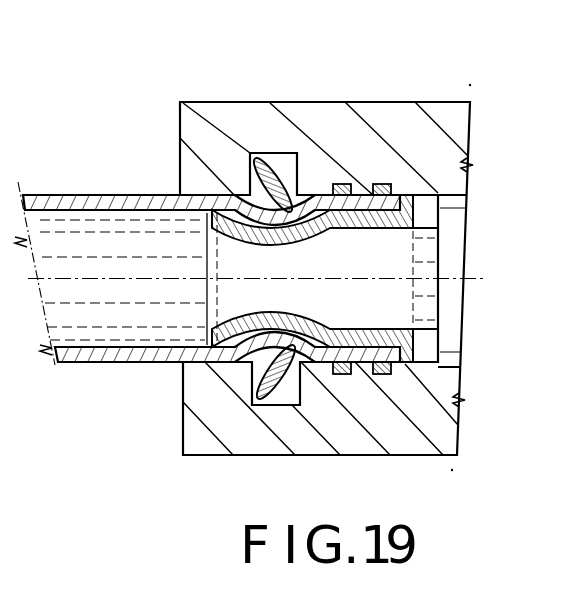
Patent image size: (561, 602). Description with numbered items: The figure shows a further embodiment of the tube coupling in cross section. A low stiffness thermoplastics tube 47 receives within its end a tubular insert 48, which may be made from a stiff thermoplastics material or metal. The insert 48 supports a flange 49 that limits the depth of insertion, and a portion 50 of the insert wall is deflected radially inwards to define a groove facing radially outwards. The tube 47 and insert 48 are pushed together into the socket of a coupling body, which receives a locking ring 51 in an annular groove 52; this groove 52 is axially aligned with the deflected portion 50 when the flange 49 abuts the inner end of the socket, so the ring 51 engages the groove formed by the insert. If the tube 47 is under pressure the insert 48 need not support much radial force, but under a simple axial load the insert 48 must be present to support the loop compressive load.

The low stiffness thermoplastics tube 47 is at (148, 196).
The tubular insert 48 is at (135, 363).
The flange 49 is at (404, 364).
The portion of the wall of the insert 50 is at (283, 318).
The locking ring 51 is at (282, 405).
The annular groove 52 is at (300, 163).